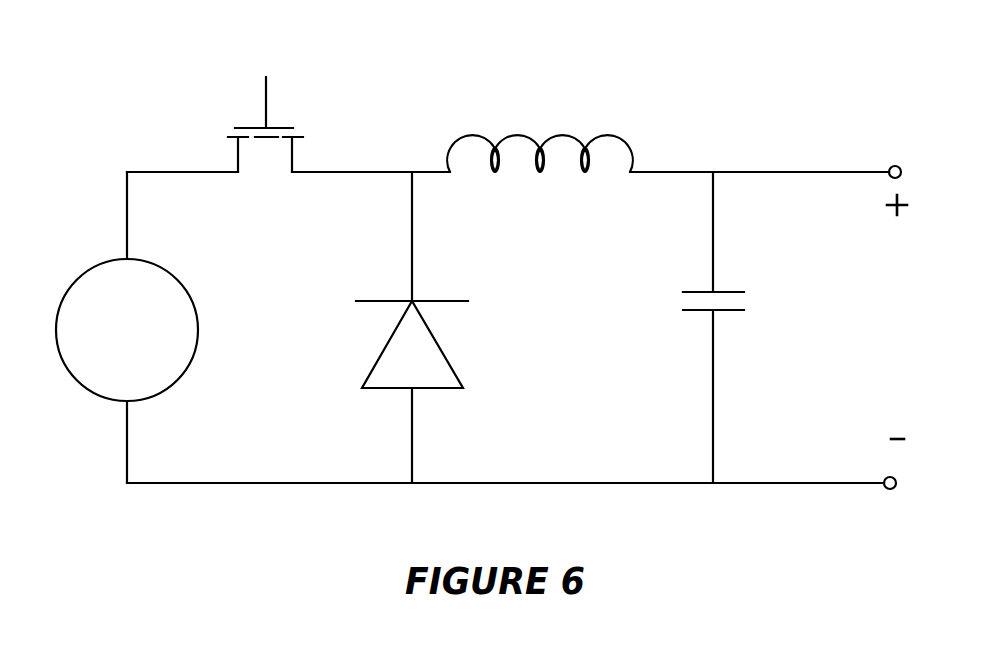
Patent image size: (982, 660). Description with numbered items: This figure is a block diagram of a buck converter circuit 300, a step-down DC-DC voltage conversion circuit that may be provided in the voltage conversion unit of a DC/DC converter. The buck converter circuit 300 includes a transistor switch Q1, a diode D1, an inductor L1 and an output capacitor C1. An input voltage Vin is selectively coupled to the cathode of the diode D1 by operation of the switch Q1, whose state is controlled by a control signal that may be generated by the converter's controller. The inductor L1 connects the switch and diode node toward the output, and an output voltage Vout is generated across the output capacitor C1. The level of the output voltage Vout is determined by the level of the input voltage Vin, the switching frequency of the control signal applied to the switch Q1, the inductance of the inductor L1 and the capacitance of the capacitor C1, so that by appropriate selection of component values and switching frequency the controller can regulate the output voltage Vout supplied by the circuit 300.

The buck converter circuit 300 is at (670, 97).
The transistor switch Q1 is at (279, 108).
The inductor L1 is at (540, 132).
The diode D1 is at (445, 344).
The output capacitor C1 is at (689, 299).
The input voltage Vin is at (127, 330).
The output voltage Vout is at (895, 327).